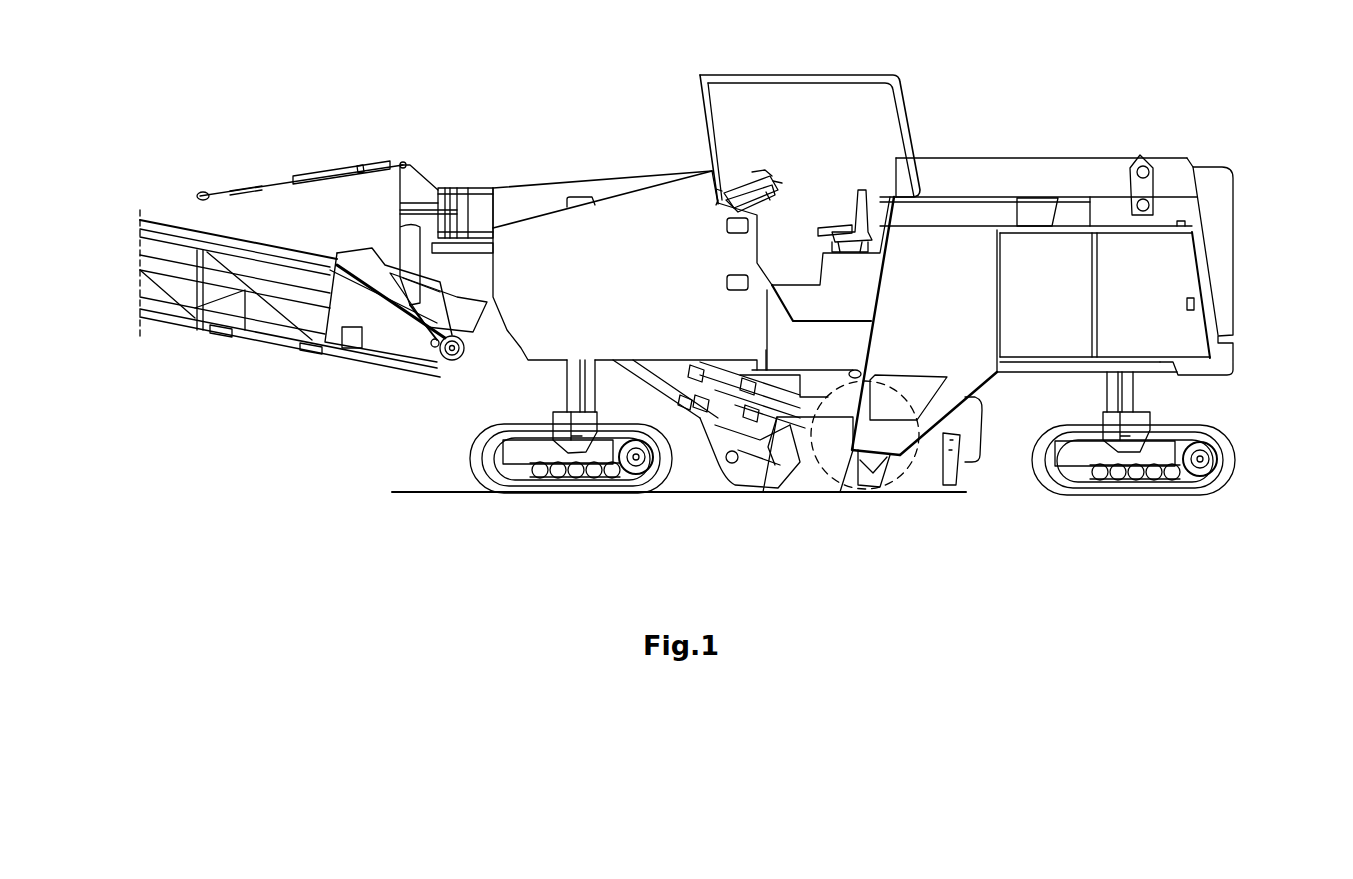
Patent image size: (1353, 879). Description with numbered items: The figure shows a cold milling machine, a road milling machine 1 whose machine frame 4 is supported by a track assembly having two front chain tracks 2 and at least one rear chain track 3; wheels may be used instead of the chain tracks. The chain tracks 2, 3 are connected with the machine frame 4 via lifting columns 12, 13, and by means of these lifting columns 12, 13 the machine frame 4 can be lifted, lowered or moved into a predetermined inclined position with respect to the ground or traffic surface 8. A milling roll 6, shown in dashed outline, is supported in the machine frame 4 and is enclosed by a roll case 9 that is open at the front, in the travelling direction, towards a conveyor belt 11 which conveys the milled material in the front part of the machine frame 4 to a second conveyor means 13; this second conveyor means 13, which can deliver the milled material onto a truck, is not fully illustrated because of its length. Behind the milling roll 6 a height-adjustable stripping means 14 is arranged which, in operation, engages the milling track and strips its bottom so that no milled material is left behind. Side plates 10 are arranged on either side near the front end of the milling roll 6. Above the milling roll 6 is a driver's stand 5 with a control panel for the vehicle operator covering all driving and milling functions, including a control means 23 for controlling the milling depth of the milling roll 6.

The road milling machine 1 is at (560, 112).
The front chain tracks 2 is at (428, 443).
The rear chain track 3 is at (1252, 460).
The machine frame 4 is at (519, 301).
The driver's stand 5 is at (826, 97).
The milling roll 6 is at (910, 488).
The ground or traffic surface 8 is at (440, 494).
The roll case 9 is at (1020, 321).
The side plates 10 is at (793, 460).
The conveyor belt 11 is at (643, 368).
The lifting column 12 is at (573, 382).
The lifting column / second conveyor means 13 is at (202, 315).
The stripping means 14 is at (978, 481).
The control means 23 is at (733, 170).